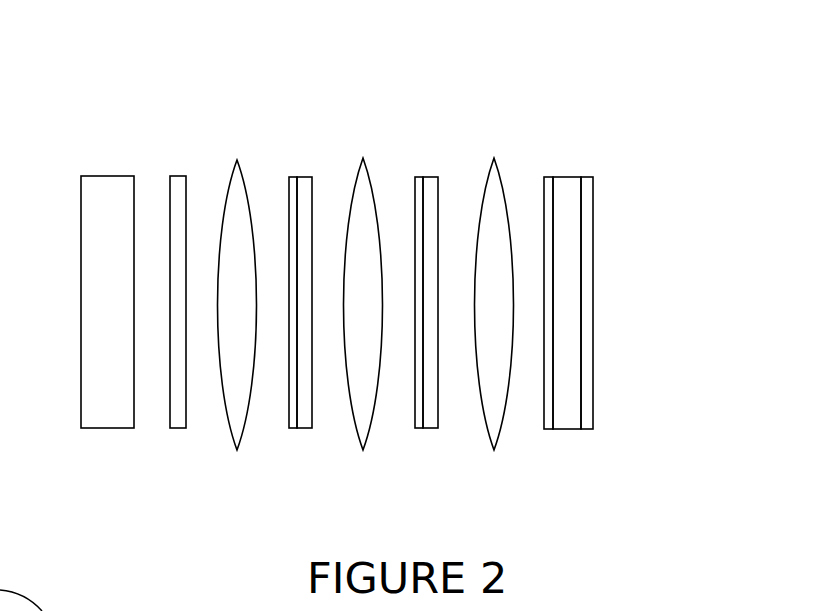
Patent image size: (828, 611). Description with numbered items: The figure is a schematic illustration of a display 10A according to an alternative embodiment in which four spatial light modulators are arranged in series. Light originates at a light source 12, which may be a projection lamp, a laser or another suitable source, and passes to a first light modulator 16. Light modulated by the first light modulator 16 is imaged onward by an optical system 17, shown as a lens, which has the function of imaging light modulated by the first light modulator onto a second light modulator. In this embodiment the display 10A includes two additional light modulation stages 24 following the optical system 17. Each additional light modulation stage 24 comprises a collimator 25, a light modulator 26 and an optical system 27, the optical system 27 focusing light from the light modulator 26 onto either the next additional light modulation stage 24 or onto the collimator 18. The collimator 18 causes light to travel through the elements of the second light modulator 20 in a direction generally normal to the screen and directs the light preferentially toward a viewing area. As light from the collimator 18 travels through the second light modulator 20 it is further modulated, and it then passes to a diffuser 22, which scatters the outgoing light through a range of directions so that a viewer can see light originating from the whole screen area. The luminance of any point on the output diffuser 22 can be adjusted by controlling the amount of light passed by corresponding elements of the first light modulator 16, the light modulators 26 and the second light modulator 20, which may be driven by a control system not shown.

The display 10A is at (160, 70).
The light source 12 is at (112, 176).
The first light modulator 16 is at (180, 176).
The optical system 17 is at (240, 158).
The additional light modulation stage 24 is at (296, 112).
The collimator 25 is at (292, 429).
The light modulator 26 is at (300, 429).
The optical system 27 is at (362, 450).
The collimator 18 is at (549, 429).
The second light modulator 20 is at (572, 177).
The diffuser 22 is at (587, 177).